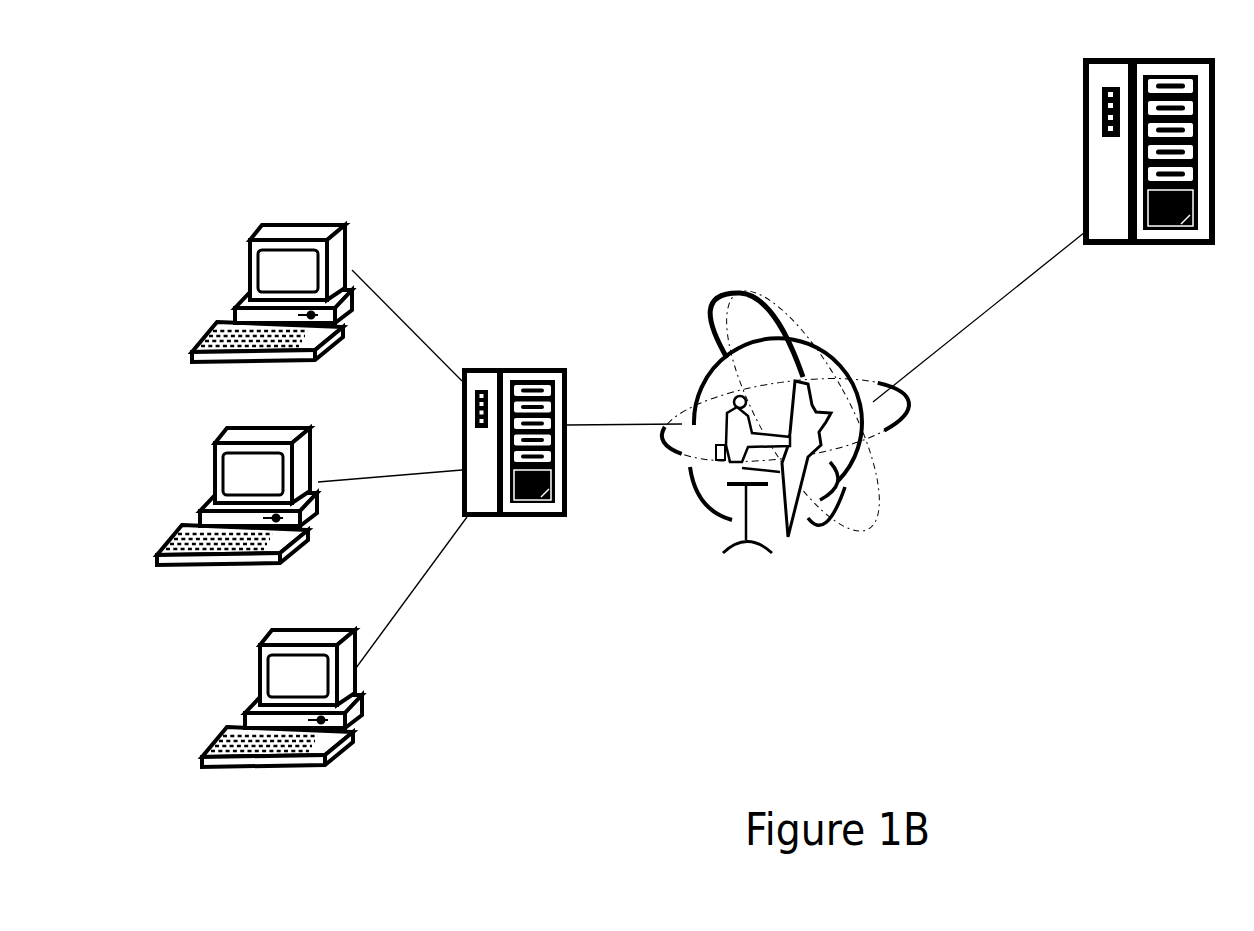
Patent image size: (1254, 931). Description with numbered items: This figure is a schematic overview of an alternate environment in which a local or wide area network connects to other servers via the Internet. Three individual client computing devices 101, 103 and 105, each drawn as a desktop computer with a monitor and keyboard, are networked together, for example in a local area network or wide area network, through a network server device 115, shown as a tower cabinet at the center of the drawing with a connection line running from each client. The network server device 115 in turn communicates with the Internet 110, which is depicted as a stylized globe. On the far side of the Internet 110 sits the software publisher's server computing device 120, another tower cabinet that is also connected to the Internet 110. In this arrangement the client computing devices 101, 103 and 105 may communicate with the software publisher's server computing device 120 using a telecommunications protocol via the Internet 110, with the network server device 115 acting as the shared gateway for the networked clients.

The client computing device 101 is at (273, 222).
The client computing device 103 is at (213, 440).
The client computing device 105 is at (272, 675).
The Internet 110 is at (743, 315).
The network server device 115 is at (518, 366).
The software publisher's server computing device 120 is at (1102, 80).